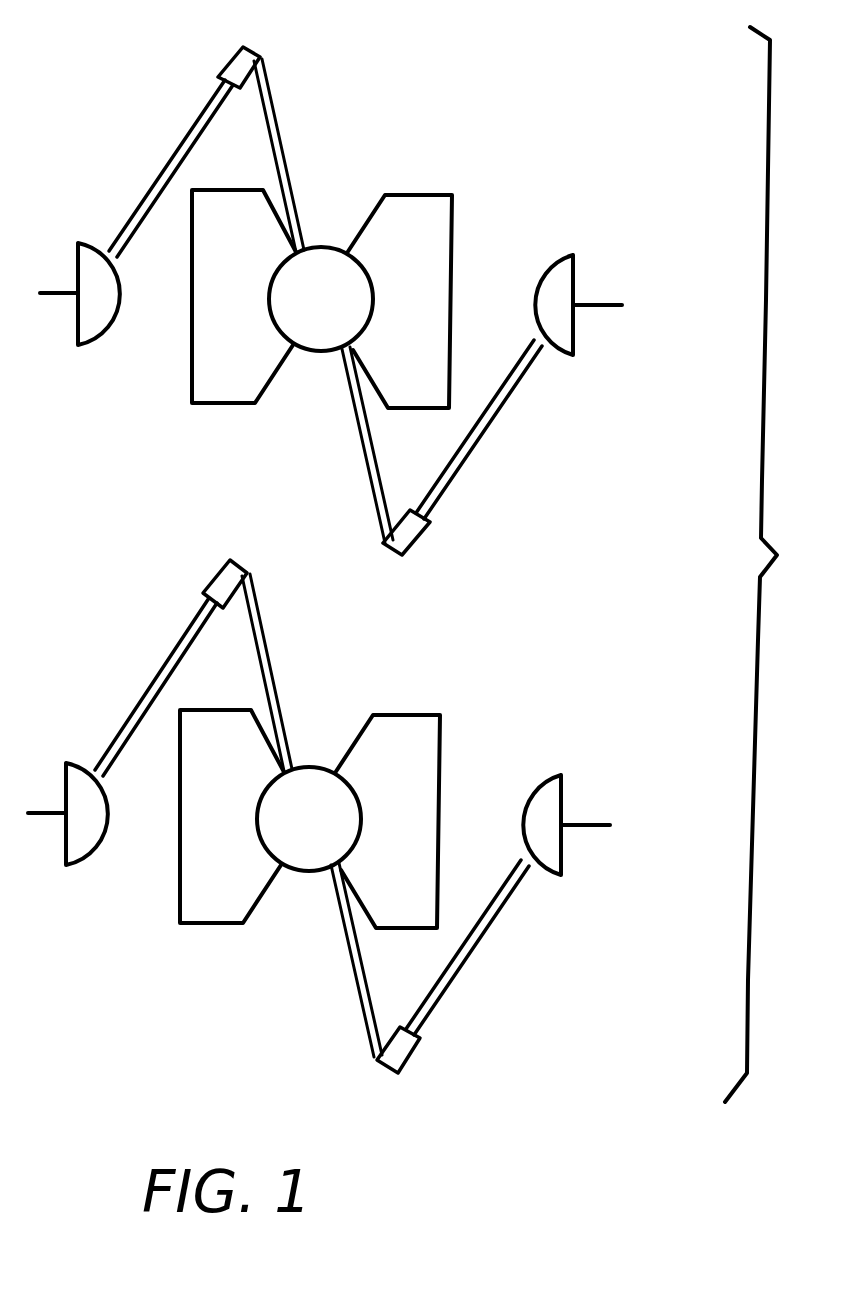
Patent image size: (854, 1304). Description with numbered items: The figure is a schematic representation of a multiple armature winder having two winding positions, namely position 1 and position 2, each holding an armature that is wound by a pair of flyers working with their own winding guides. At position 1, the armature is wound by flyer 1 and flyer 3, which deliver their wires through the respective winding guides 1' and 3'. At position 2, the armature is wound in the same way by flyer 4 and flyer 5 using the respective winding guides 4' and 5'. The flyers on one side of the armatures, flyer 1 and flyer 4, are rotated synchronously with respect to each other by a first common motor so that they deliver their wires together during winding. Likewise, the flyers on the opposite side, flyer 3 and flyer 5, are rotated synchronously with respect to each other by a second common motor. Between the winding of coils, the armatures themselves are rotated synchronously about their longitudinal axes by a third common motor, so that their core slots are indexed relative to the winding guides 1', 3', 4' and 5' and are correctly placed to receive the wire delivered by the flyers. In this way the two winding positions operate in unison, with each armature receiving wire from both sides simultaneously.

The flyer 1 is at (331, 286).
The winding guide 1' is at (205, 316).
The position 2 is at (319, 816).
The flyer 3 is at (462, 447).
The winding guide 3' is at (428, 294).
The flyer 4 is at (171, 668).
The winding guide 4' is at (169, 850).
The flyer 5 is at (460, 966).
The winding guide 5' is at (441, 818).